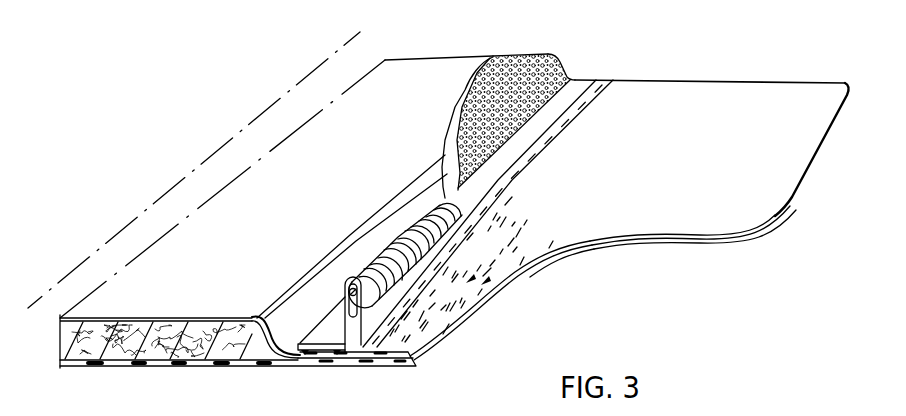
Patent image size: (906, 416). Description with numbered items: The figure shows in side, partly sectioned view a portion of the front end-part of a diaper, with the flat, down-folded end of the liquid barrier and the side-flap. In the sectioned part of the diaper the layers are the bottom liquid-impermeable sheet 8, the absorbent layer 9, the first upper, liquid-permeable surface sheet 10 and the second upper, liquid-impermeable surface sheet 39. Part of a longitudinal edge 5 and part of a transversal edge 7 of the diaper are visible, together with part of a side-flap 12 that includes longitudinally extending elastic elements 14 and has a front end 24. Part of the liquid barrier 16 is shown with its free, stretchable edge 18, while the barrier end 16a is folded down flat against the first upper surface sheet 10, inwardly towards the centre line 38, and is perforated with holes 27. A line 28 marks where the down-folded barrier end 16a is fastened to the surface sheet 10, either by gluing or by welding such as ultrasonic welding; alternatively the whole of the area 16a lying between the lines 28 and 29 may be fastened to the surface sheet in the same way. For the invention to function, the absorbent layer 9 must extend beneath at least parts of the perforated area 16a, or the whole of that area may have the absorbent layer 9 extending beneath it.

The longitudinal edge 5 is at (416, 362).
The transversal edge 7 is at (394, 61).
The bottom liquid-impermeable sheet 8 is at (150, 368).
The absorbent layer 9 is at (204, 368).
The first upper, liquid-permeable surface sheet 10 is at (290, 198).
The side-flap 12 is at (426, 306).
The longitudinally extending elastic elements 14 is at (488, 287).
The liquid barrier 16 is at (338, 298).
The barrier end 16a is at (552, 56).
The free, stretchable edge 18 is at (398, 234).
The front end of side-flap 24 is at (645, 94).
The holes 27 is at (503, 55).
The fastening line 28 is at (468, 86).
The line 29 is at (486, 212).
The centre line 38 is at (352, 38).
The second upper, liquid-impermeable surface sheet 39 is at (701, 175).